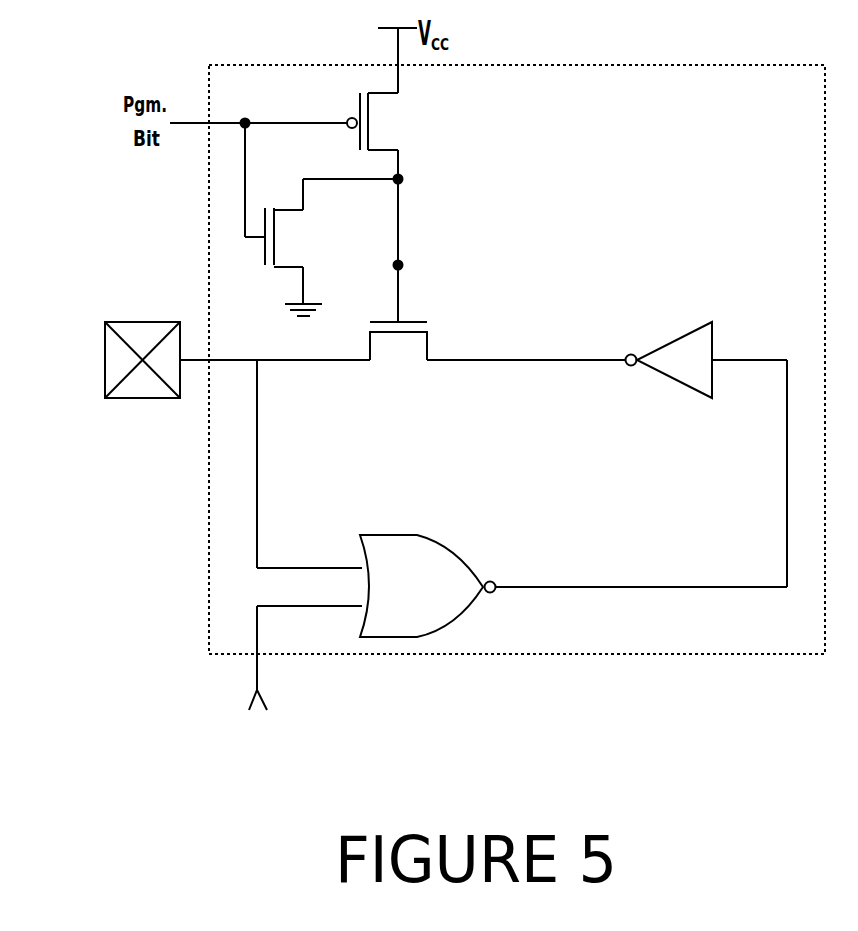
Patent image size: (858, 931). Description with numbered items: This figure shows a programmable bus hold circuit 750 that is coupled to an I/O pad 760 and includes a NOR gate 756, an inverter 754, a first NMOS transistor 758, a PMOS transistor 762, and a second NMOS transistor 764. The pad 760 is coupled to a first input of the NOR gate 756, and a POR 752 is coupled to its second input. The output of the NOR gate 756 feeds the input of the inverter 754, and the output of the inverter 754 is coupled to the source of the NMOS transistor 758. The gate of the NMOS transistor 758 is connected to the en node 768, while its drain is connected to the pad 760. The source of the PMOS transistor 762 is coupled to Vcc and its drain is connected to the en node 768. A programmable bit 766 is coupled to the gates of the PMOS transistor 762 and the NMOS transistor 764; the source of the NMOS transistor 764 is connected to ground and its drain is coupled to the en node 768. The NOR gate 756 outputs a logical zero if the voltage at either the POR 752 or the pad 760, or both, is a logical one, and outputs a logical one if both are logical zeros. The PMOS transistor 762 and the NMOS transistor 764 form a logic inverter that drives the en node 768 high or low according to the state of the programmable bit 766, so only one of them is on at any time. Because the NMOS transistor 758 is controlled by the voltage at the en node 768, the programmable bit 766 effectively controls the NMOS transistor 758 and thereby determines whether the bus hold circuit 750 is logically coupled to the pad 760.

The programmable bus hold circuit 750 is at (517, 359).
The POR 752 is at (301, 691).
The inverter 754 is at (669, 360).
The NOR gate 756 is at (428, 586).
The first NMOS transistor 758 is at (418, 335).
The I/O pad 760 is at (112, 398).
The PMOS transistor 762 is at (384, 136).
The second NMOS transistor 764 is at (331, 247).
The programmable bit 766 is at (258, 163).
The en node 768 is at (433, 249).